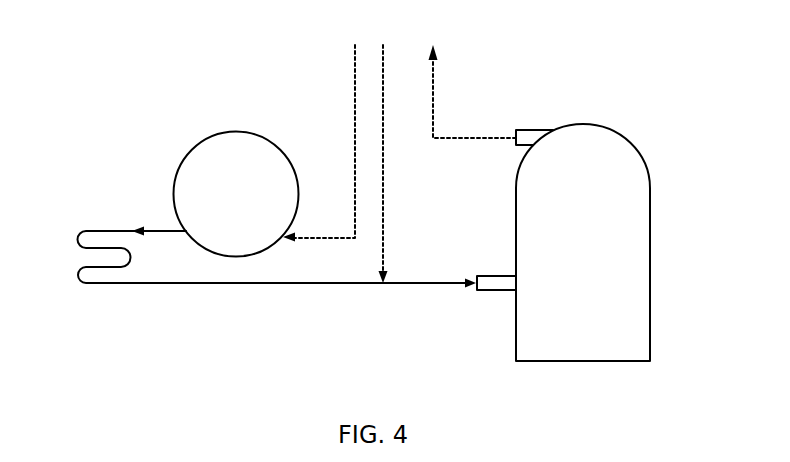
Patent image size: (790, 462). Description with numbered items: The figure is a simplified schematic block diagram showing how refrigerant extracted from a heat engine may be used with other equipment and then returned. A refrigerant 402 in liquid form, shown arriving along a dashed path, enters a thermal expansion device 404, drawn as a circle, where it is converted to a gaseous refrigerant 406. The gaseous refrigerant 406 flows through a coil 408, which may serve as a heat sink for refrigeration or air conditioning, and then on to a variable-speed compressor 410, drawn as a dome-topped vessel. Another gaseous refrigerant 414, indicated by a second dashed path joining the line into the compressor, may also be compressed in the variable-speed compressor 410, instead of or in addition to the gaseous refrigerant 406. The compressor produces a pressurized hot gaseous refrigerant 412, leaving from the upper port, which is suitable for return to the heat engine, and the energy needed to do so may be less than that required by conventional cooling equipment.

The refrigerant 402 is at (355, 103).
The thermal expansion device 404 is at (196, 146).
The gaseous refrigerant 406 is at (163, 231).
The coil 408 is at (100, 283).
The variable-speed compressor 410 is at (650, 225).
The pressurized hot gaseous refrigerant 412 is at (445, 138).
The gaseous refrigerant 414 is at (383, 190).